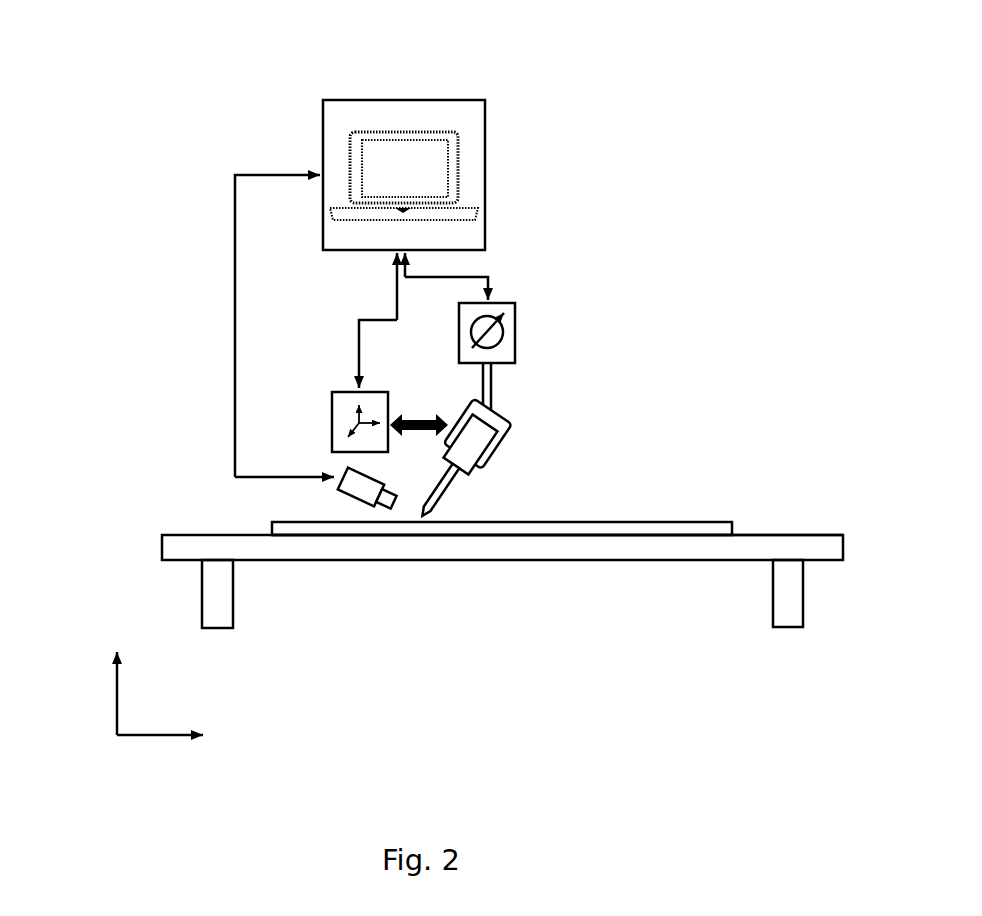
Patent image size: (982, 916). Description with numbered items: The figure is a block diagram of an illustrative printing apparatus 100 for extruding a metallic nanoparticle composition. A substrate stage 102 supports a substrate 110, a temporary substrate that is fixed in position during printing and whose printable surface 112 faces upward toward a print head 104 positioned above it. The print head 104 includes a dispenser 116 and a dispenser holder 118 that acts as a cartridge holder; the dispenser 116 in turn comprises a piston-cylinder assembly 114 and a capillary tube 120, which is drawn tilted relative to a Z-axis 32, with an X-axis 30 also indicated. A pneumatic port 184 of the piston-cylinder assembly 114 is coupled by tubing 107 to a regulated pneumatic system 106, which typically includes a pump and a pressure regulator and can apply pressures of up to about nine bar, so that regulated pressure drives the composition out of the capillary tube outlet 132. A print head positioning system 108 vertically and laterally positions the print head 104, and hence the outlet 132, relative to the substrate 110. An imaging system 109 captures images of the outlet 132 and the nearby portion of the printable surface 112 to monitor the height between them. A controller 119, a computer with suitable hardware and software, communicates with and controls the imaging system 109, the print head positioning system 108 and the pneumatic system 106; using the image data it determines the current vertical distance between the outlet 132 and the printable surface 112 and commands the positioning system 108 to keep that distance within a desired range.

The printing apparatus 100 is at (293, 90).
The controller 119 is at (490, 160).
The regulated pneumatic system 106 is at (523, 332).
The tubing 107 is at (498, 376).
The pneumatic port 184 is at (497, 420).
The dispenser holder 118 is at (518, 427).
The piston-cylinder assembly 114 is at (500, 444).
The capillary tube 120 is at (460, 482).
The dispenser 116 is at (530, 466).
The print head positioning system 108 is at (328, 413).
The imaging system 109 is at (333, 484).
The print head 104 is at (640, 428).
The printable surface 112 is at (653, 518).
The substrate 110 is at (736, 526).
The substrate stage 102 is at (160, 548).
The capillary tube outlet 132 is at (425, 525).
The Z-axis 32 is at (115, 687).
The X axis 30 is at (184, 741).